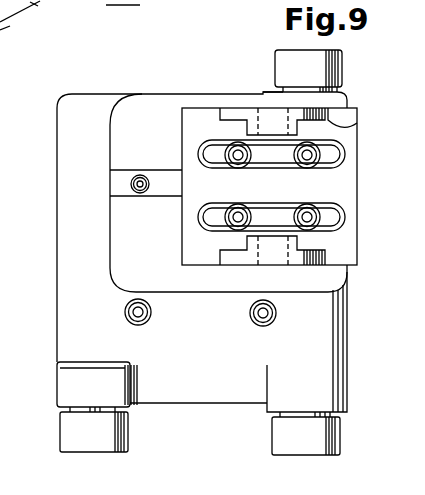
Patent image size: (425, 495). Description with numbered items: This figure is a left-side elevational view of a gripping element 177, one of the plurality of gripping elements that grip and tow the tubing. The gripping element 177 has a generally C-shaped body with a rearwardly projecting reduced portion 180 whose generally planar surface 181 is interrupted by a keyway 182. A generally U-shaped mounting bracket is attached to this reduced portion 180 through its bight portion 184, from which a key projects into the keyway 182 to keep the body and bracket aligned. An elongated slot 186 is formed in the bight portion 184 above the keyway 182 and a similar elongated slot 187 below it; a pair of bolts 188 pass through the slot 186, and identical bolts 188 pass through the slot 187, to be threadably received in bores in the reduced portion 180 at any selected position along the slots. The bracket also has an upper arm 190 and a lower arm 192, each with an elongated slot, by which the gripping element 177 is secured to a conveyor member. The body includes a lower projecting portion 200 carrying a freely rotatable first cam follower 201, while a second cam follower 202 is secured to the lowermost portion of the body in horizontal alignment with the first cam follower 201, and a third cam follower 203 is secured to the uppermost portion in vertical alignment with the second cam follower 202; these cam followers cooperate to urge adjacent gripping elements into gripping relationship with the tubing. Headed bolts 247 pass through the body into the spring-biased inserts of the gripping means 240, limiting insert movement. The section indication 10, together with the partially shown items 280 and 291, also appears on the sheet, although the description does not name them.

The section line 10- 10 is at (266, 68).
The gripping element 177 is at (55, 343).
The rearwardly projecting reduced portion 180 is at (113, 149).
The planar surface 181 is at (160, 124).
The keyway 182 is at (154, 197).
The bight portion 184 is at (344, 167).
The elongated slot 186 is at (228, 150).
The elongated slot 187 is at (340, 219).
The bolts 188 is at (305, 168).
The upper arm 190 is at (357, 116).
The lower arm 192 is at (214, 252).
The lower projecting portion 200 is at (138, 390).
The first cam follower 201 is at (83, 447).
The second cam follower 202 is at (300, 446).
The third cam follower 203 is at (330, 66).
The headed bolts 247 is at (155, 171).
The gripping means 240 is at (44, 15).
The element of adjacent figure 280 is at (127, 5).
The element of adjacent figure 291 is at (23, 36).